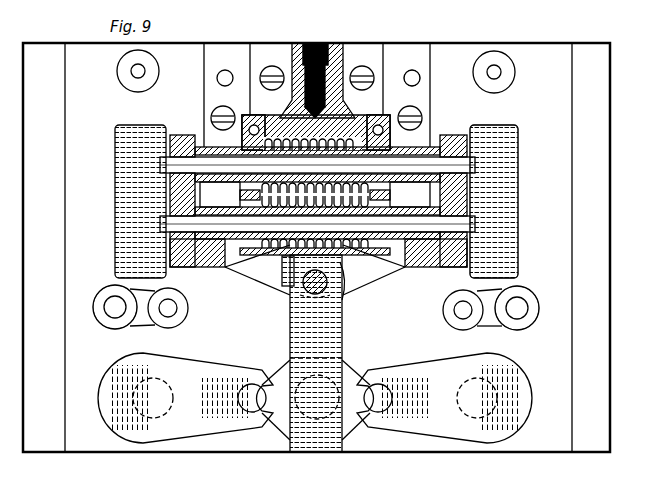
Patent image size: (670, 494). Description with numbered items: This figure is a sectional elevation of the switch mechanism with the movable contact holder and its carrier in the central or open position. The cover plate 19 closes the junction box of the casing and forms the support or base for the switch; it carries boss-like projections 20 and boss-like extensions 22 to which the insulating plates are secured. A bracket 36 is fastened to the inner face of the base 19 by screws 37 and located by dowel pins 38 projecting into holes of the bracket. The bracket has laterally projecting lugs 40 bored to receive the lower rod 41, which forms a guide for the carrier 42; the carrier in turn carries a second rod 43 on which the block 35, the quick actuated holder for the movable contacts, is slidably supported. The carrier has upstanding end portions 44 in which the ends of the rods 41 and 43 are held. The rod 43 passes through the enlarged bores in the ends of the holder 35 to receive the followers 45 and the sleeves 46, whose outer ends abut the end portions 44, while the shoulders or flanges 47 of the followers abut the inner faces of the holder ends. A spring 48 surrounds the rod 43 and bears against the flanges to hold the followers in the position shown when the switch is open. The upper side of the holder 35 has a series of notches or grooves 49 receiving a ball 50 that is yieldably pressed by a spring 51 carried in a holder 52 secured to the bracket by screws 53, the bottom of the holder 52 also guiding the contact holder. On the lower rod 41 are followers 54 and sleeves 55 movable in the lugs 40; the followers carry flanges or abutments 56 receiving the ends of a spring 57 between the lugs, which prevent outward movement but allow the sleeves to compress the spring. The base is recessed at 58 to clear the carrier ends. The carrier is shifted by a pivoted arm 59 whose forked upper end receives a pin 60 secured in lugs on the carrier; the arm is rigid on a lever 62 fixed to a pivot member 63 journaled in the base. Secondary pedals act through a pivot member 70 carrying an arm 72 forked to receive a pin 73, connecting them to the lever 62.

The cover plate 19 is at (611, 345).
The boss-like projections 20 is at (126, 77).
The boss-like extensions 22 is at (118, 318).
The block 35 is at (345, 80).
The bracket 36 is at (415, 50).
The screws 37 is at (418, 108).
The dowel pins 38 is at (418, 73).
The laterally projecting lugs 40 is at (403, 270).
The rod 41 is at (500, 228).
The carrier 42 is at (232, 268).
The second rod 43 is at (432, 150).
The upstanding end portions 44 is at (170, 193).
The followers 45 is at (345, 150).
The sleeves 46 is at (200, 145).
The shoulders or flanges 47 is at (245, 135).
The spring 48 is at (265, 120).
The notches or grooves 49 is at (260, 100).
The ball 50 is at (300, 95).
The spring 51 is at (305, 45).
The holder 52 is at (328, 45).
The screws 53 is at (365, 70).
The followers 54 is at (283, 262).
The sleeves 55 is at (222, 262).
The flanges or abutments 56 is at (246, 196).
The spring 57 is at (345, 255).
The recess 58 is at (512, 255).
The pivoted arm 59 is at (340, 352).
The pin 60 is at (330, 290).
The lever 62 is at (282, 447).
The pin or pivot member 63 is at (336, 450).
The pivot member 70 is at (130, 400).
The arm 72 is at (210, 380).
The pin 73 is at (252, 394).